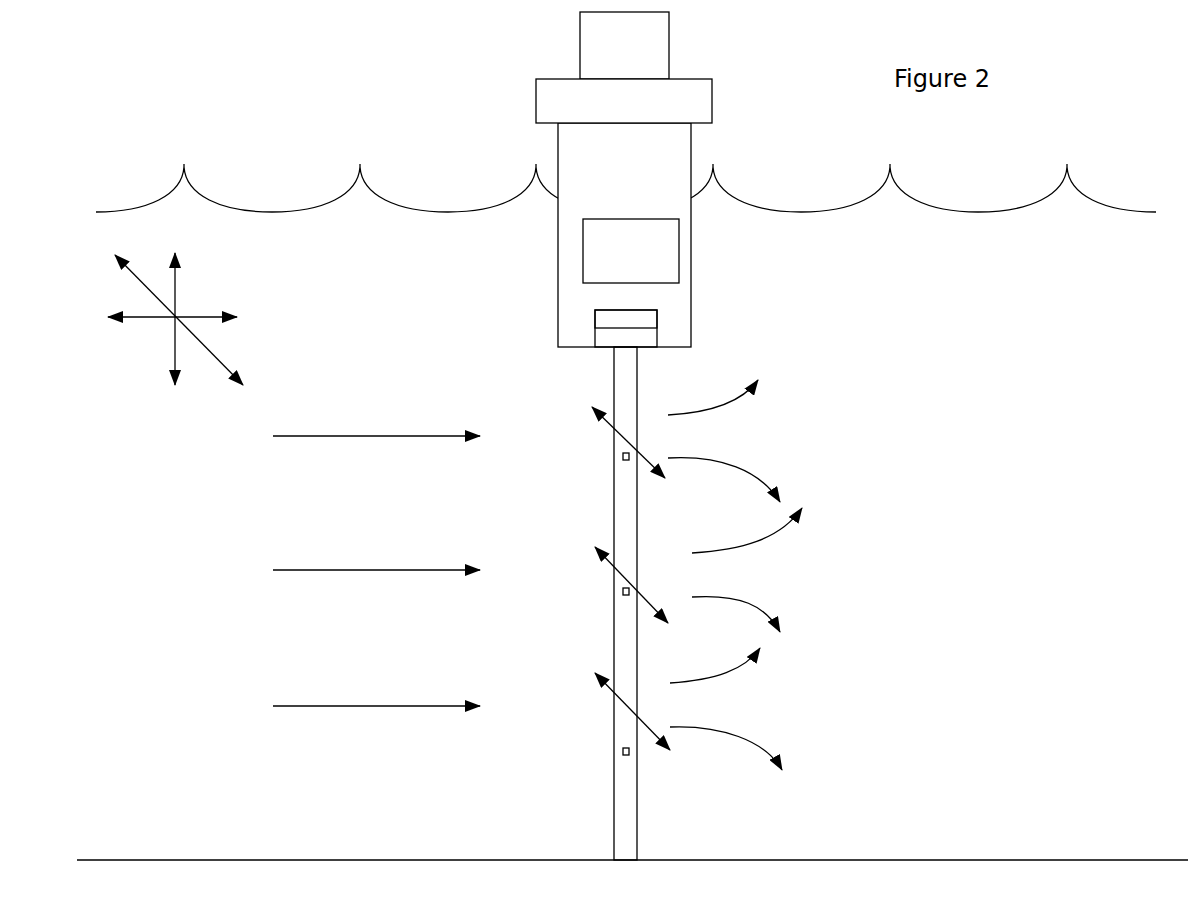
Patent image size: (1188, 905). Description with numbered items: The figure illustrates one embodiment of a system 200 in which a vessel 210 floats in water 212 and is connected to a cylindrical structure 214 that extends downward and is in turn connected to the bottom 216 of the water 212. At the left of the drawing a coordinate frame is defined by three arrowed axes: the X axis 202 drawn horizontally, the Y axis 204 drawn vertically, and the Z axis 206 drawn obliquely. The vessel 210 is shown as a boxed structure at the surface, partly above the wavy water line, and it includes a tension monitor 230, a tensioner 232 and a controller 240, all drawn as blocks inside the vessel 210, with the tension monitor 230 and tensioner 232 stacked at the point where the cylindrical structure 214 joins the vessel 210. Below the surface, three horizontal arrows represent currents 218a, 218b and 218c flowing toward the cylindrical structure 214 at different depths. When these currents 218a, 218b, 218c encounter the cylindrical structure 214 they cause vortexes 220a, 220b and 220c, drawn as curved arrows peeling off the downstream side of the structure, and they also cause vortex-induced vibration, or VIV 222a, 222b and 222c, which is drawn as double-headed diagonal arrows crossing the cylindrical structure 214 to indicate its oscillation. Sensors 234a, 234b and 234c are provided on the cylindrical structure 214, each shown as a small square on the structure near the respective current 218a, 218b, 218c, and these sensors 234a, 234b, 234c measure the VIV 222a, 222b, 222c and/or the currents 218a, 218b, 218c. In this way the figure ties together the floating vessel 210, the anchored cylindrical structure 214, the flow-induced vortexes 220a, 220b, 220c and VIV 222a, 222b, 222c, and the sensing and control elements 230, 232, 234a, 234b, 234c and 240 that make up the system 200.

The system 200 is at (272, 100).
The X axis 202 is at (156, 314).
The Y axis 204 is at (175, 341).
The Z axis 206 is at (160, 303).
The vessel 210 is at (535, 100).
The water 212 is at (626, 231).
The cylindrical structure 214 is at (638, 392).
The bottom 216 is at (280, 860).
The current 218a is at (376, 420).
The current 218b is at (376, 554).
The current 218c is at (376, 689).
The vortex 220a is at (724, 441).
The vortex 220b is at (747, 570).
The vortex 220c is at (726, 709).
The VIV 222a is at (603, 430).
The VIV 222b is at (612, 569).
The VIV 222c is at (610, 699).
The tension monitor 230 is at (610, 337).
The tensioner 232 is at (618, 318).
The sensor 234a is at (622, 455).
The sensor 234b is at (622, 591).
The sensor 234c is at (622, 752).
The controller 240 is at (631, 251).